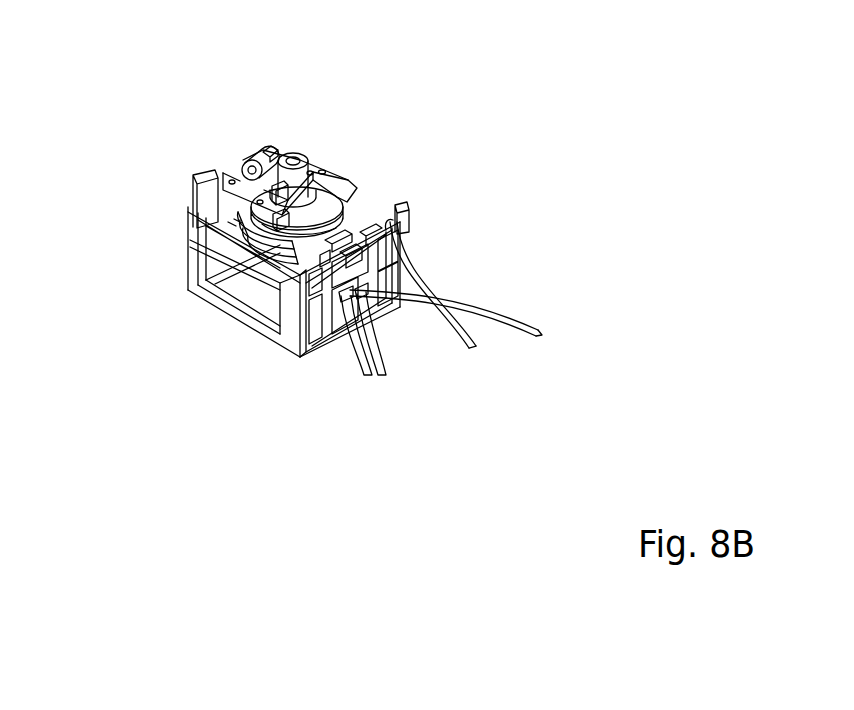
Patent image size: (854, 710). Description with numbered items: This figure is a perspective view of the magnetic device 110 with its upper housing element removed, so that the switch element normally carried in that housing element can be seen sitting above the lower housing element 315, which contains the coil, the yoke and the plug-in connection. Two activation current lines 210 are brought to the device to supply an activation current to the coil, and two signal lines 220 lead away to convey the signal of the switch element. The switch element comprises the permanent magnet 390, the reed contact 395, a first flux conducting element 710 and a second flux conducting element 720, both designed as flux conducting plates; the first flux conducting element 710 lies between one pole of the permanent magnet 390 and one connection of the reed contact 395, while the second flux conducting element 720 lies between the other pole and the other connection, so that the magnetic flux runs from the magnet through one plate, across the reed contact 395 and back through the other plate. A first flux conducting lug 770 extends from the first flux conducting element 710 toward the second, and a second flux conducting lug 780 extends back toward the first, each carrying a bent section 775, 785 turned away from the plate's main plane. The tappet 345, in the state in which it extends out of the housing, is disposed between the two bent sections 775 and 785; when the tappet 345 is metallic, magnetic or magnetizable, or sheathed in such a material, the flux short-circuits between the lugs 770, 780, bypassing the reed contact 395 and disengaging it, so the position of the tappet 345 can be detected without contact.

The magnetic device 110 is at (452, 136).
The activation current lines 210 is at (384, 375).
The signal lines 220 is at (433, 283).
The lower housing element 315 is at (300, 340).
The tappet 345 is at (276, 146).
The permanent magnet 390 is at (243, 151).
The reed contact 395 is at (407, 232).
The first flux conducting element 710 is at (243, 210).
The second flux conducting element 720 is at (352, 176).
The first flux conducting lug 770 is at (265, 215).
The bent section 775 is at (273, 200).
The second flux conducting lug 780 is at (338, 142).
The bent section 785 is at (312, 147).